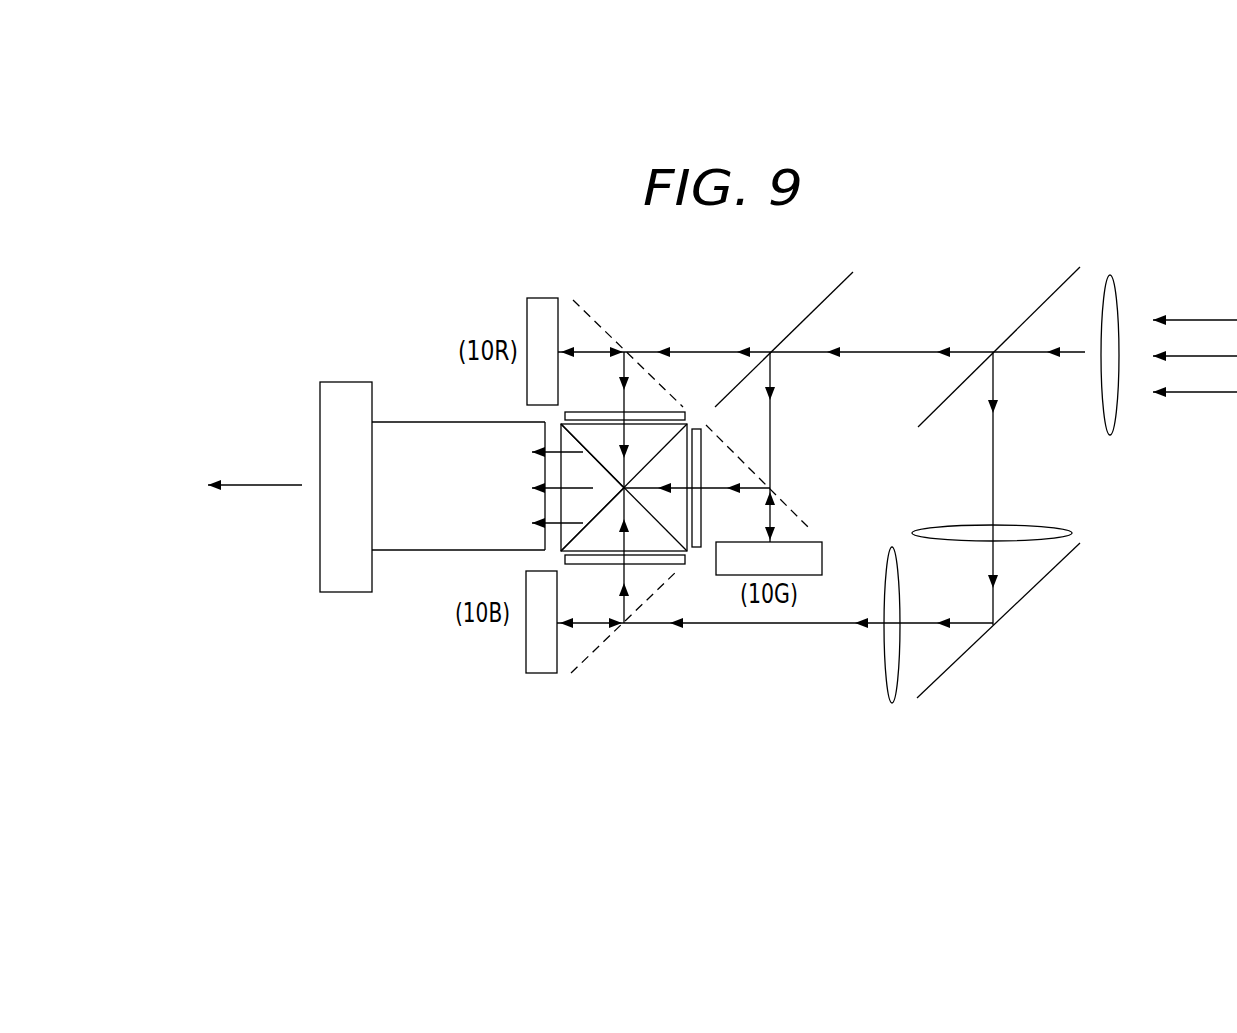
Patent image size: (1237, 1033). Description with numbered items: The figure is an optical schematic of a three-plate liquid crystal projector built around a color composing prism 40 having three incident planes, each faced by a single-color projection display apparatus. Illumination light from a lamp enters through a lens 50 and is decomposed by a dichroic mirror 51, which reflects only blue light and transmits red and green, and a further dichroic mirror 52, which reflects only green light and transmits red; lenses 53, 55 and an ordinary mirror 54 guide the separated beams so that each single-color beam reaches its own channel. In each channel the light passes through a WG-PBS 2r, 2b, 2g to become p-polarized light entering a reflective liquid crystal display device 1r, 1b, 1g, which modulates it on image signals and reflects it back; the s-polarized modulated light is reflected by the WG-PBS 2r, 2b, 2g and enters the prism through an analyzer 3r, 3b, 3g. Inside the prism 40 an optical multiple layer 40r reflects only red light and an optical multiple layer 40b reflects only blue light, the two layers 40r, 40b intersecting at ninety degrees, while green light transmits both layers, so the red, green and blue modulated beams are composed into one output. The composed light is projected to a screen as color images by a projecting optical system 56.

The reflective liquid crystal display device 1r is at (526, 318).
The WG-PBS 2r is at (597, 323).
The analyzer 3r is at (648, 415).
The reflective liquid crystal display device 1b is at (526, 645).
The WG-PBS 2b is at (603, 641).
The analyzer 3b is at (657, 562).
The reflective liquid crystal display device 1g is at (822, 548).
The WG-PBS 2g is at (783, 500).
The analyzer 3g is at (705, 460).
The color composing prism 40 is at (573, 449).
The optical multiple layer 40b is at (598, 462).
The optical multiple layer 40r is at (597, 510).
The lens 50 is at (1112, 437).
The dichroic mirror 51 is at (1020, 327).
The dichroic mirror 52 is at (805, 318).
The lens 53 is at (966, 523).
The ordinary mirror 54 is at (1037, 585).
The lens 55 is at (882, 652).
The projecting optical system 56 is at (319, 441).